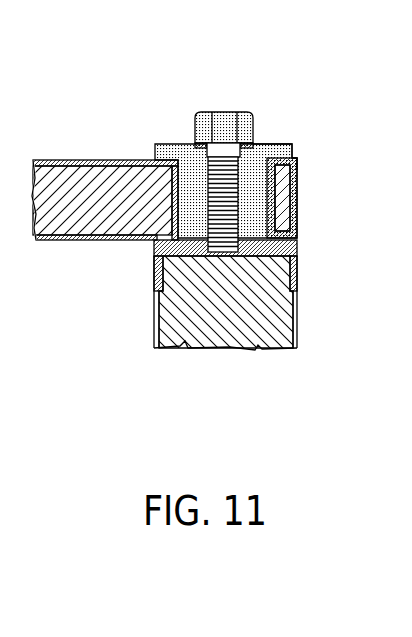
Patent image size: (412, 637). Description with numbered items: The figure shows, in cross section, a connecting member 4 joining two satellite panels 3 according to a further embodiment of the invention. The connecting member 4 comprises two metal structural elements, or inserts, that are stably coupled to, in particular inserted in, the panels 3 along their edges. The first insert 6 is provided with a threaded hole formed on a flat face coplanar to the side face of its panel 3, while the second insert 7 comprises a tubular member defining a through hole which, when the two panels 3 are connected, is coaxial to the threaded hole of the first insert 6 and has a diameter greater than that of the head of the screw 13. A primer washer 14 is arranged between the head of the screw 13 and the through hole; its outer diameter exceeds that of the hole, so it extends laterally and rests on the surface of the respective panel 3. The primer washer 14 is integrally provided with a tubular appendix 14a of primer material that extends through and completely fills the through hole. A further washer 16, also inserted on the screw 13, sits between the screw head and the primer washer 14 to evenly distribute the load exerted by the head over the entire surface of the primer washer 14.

The panel 3 is at (87, 180).
The connecting member 4 is at (115, 103).
The first insert 6 is at (298, 249).
The second insert 7 is at (298, 152).
The screw 13 is at (290, 204).
The primer washer 14 is at (275, 148).
The tubular appendix 14a is at (293, 181).
The further washer 16 is at (193, 143).